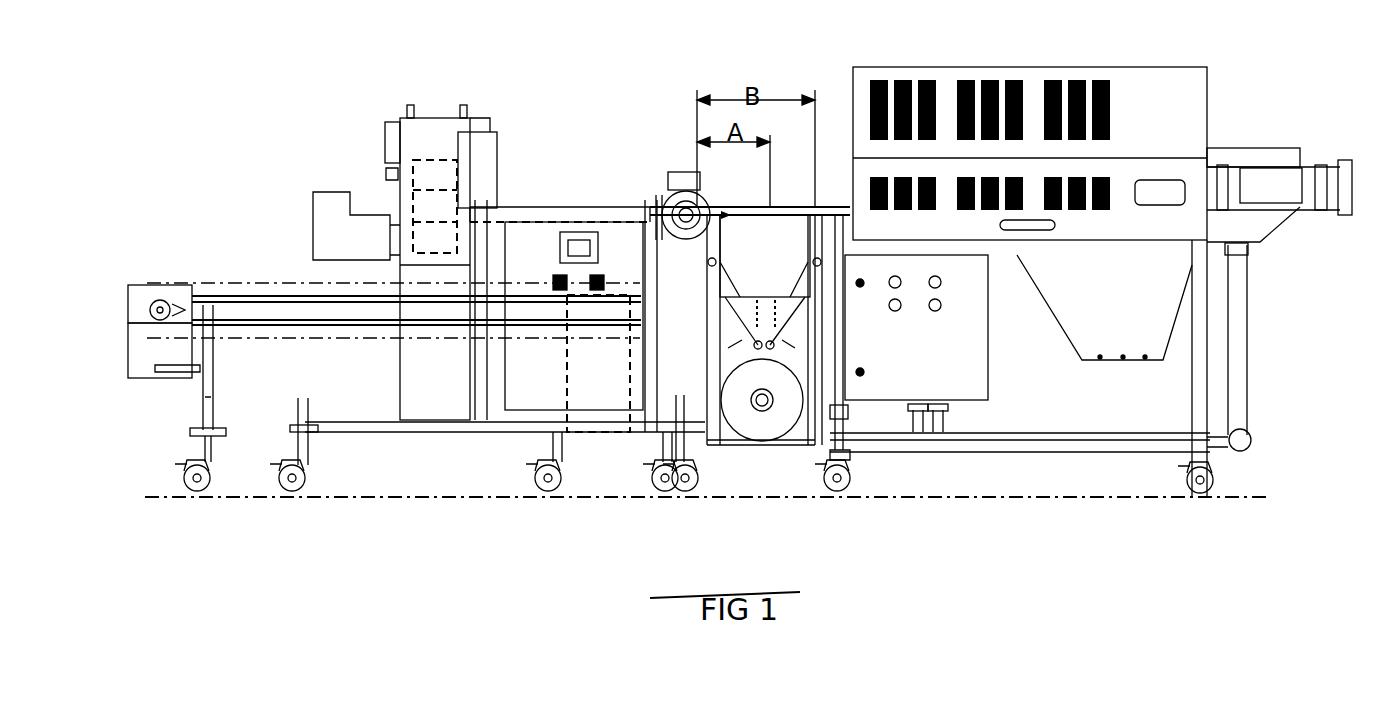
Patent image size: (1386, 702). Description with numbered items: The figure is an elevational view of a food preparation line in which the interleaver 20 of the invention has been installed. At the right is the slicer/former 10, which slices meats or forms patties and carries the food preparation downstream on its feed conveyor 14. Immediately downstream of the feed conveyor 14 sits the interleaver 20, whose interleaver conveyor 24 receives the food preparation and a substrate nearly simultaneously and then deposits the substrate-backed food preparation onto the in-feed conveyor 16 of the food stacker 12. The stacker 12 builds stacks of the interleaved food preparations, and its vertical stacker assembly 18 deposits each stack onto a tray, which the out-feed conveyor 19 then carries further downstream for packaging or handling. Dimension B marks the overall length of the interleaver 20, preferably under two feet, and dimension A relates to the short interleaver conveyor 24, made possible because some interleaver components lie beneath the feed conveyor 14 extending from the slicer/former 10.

The slicer/former 10 is at (1058, 60).
The food stacker 12 is at (570, 198).
The feed conveyor 14 is at (820, 200).
The in-feed conveyor 16 is at (616, 205).
The vertical stacker assembly 18 is at (392, 198).
The out-feed conveyor 19 is at (253, 275).
The interleaver 20 is at (740, 462).
The interleaver conveyor 24 is at (748, 205).